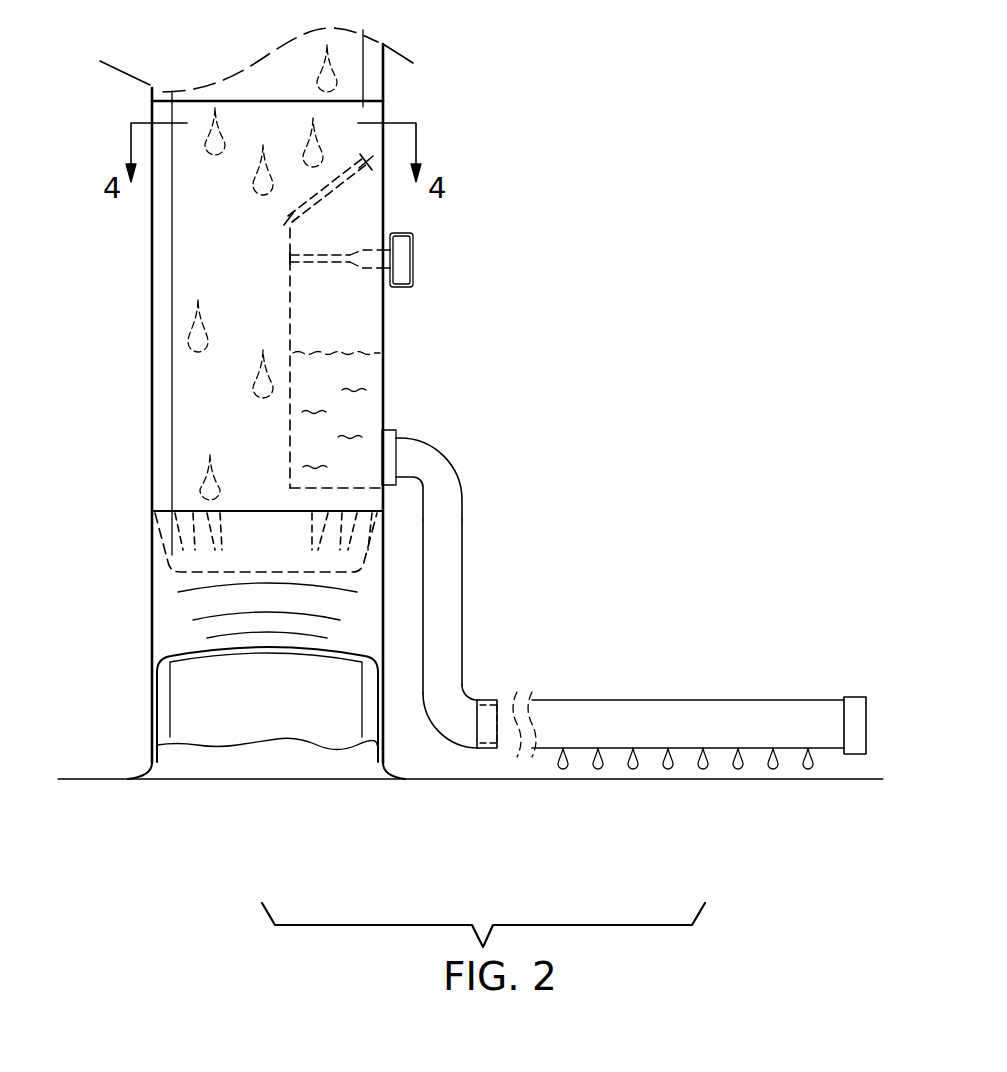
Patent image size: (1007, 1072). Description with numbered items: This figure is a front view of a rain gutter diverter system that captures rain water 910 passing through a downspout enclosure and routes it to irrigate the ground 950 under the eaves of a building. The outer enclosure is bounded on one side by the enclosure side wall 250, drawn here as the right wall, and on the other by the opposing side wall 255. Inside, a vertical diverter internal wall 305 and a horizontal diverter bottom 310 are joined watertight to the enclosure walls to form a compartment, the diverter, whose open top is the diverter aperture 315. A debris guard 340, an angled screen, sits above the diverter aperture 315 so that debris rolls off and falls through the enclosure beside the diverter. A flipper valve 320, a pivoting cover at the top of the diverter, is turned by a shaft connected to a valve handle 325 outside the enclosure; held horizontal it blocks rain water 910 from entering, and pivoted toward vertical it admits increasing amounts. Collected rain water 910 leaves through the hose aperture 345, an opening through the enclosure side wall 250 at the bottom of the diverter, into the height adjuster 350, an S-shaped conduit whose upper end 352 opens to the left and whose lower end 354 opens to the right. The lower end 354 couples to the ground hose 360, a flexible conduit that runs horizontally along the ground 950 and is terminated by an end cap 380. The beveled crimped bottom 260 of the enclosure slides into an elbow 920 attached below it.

The enclosure side wall 250 is at (383, 328).
The opposing side wall 255 is at (152, 348).
The crimped bottom 260 is at (115, 507).
The diverter internal wall 305 is at (290, 425).
The diverter bottom 310 is at (343, 489).
The diverter aperture 315 is at (352, 228).
The flipper valve 320 is at (313, 262).
The valve handle 325 is at (408, 258).
The debris guard 340 is at (290, 208).
The hose aperture 345 is at (390, 430).
The height adjuster 350 is at (448, 587).
The upper end 352 is at (435, 452).
The lower end 354 is at (452, 728).
The ground hose 360 is at (630, 713).
The end cap 380 is at (860, 717).
The rain water 910 is at (380, 400).
The elbow 920 is at (253, 615).
The ground 950 is at (95, 779).